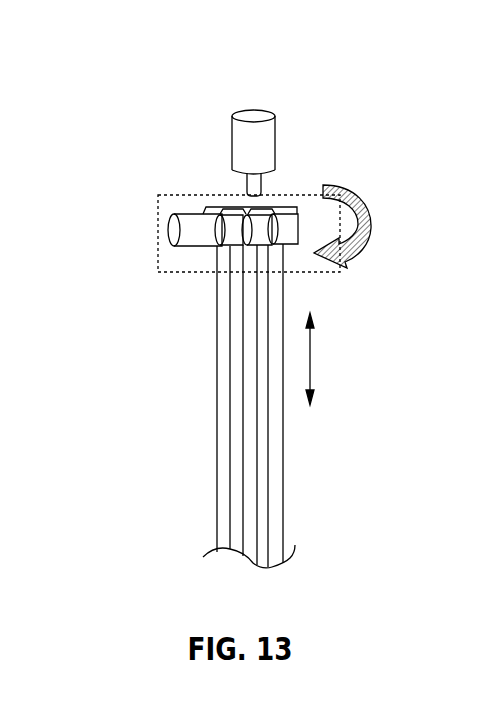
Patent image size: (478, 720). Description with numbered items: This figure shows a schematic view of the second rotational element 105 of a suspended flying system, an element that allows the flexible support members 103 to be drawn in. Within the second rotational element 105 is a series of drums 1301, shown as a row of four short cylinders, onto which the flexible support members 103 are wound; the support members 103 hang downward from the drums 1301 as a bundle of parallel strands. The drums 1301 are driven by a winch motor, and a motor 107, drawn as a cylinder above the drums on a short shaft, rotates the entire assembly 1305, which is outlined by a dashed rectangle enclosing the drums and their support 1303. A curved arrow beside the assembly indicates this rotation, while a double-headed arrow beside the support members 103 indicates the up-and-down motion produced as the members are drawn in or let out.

The flexible support members 103 is at (287, 462).
The second rotational element 105 is at (350, 156).
The motor 107 is at (275, 110).
The drums 1301 is at (212, 258).
The roller support plate 1303 is at (187, 212).
The entire assembly 1305 is at (165, 251).